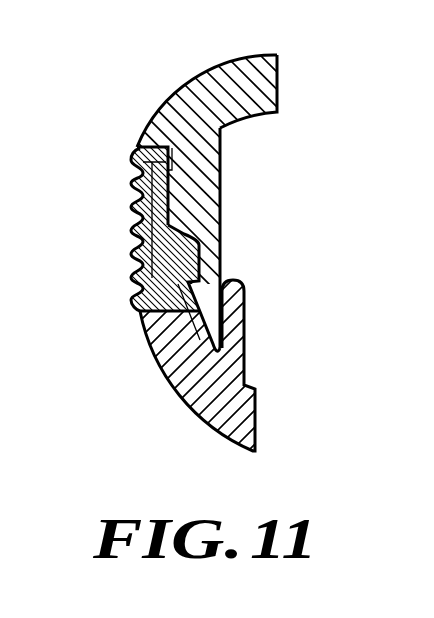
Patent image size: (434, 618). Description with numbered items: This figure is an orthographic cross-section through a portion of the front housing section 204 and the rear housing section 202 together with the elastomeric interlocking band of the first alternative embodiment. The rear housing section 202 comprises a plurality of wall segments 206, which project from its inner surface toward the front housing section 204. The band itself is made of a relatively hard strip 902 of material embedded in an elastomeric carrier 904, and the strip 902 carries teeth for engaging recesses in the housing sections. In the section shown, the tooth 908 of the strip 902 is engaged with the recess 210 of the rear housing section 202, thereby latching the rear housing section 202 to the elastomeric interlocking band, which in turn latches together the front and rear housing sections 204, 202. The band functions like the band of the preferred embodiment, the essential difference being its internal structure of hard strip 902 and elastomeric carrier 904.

The rear housing section 202 is at (245, 54).
The front housing section 204 is at (258, 423).
The wall segments 206 is at (221, 170).
The tooth 908 is at (191, 238).
The strip 902 is at (137, 188).
The elastomeric carrier 904 is at (137, 240).
The recess 210 is at (133, 280).